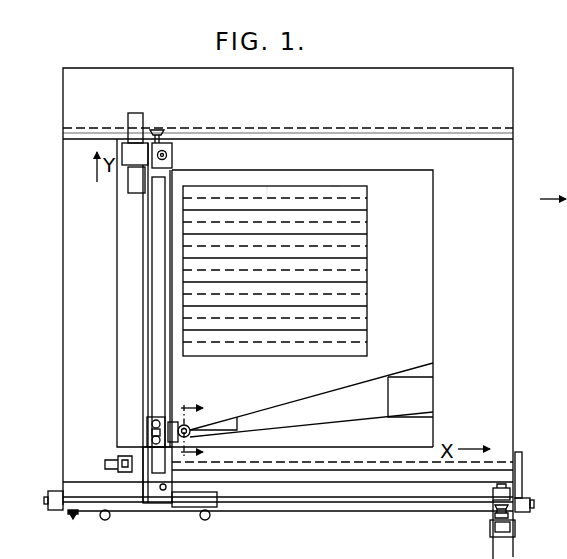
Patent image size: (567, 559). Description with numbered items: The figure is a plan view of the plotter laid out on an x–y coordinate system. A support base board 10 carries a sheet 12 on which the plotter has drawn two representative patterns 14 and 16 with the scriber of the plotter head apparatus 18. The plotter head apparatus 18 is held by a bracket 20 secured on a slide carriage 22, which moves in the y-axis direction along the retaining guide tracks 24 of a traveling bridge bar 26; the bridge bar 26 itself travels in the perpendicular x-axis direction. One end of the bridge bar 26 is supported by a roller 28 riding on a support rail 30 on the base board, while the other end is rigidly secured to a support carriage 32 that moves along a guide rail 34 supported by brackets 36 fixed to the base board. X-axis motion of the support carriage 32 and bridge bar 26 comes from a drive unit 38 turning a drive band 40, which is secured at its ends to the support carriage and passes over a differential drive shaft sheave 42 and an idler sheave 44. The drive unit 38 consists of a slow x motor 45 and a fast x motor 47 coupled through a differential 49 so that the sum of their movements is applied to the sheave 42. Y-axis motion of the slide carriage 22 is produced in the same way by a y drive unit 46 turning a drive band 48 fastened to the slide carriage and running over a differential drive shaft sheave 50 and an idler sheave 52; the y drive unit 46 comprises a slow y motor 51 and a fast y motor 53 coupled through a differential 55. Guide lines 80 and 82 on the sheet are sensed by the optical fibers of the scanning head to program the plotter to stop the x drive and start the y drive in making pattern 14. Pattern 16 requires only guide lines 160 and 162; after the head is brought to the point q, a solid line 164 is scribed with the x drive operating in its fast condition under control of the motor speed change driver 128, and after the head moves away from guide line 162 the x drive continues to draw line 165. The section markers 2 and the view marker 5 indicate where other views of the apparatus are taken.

The support base board 10 is at (515, 275).
The sheet 12 is at (436, 268).
The pattern 14 is at (422, 380).
The pattern 16 is at (367, 220).
The plotter head apparatus 18 is at (180, 422).
The bracket 20 is at (195, 436).
The slide carriage 22 is at (147, 430).
The retaining guide tracks 24 is at (153, 265).
The traveling bridge bar 26 is at (143, 323).
The roller 28 is at (162, 128).
The support rail 30 is at (300, 128).
The support carriage 32 is at (190, 507).
The guide rail 34 is at (290, 508).
The brackets 36 is at (60, 487).
The drive unit 38 is at (490, 525).
The drive band 40 is at (405, 517).
The differential drive shaft sheave 42 is at (510, 512).
The idler sheave 44 is at (68, 516).
The slow x motor 45 is at (493, 490).
The y drive unit 46 is at (128, 118).
The fast x motor 47 is at (493, 553).
The drive band 48 is at (152, 232).
The differential 49 is at (515, 532).
The differential drive shaft sheave 50 is at (168, 146).
The slow y motor 51 is at (130, 183).
The idler sheave 52 is at (160, 497).
The fast y motor 53 is at (137, 113).
The differential 55 is at (173, 155).
The guide line 80 is at (320, 395).
The guide line 82 is at (350, 421).
The motor speed change driver 128 is at (433, 376).
The guide line 160 is at (185, 351).
The guide line 162 is at (368, 357).
The line 164 is at (330, 186).
The line 165 is at (267, 197).
The point q is at (184, 185).
The section line for FIG. 2 is at (199, 432).
The view direction for FIG. 5 is at (553, 218).